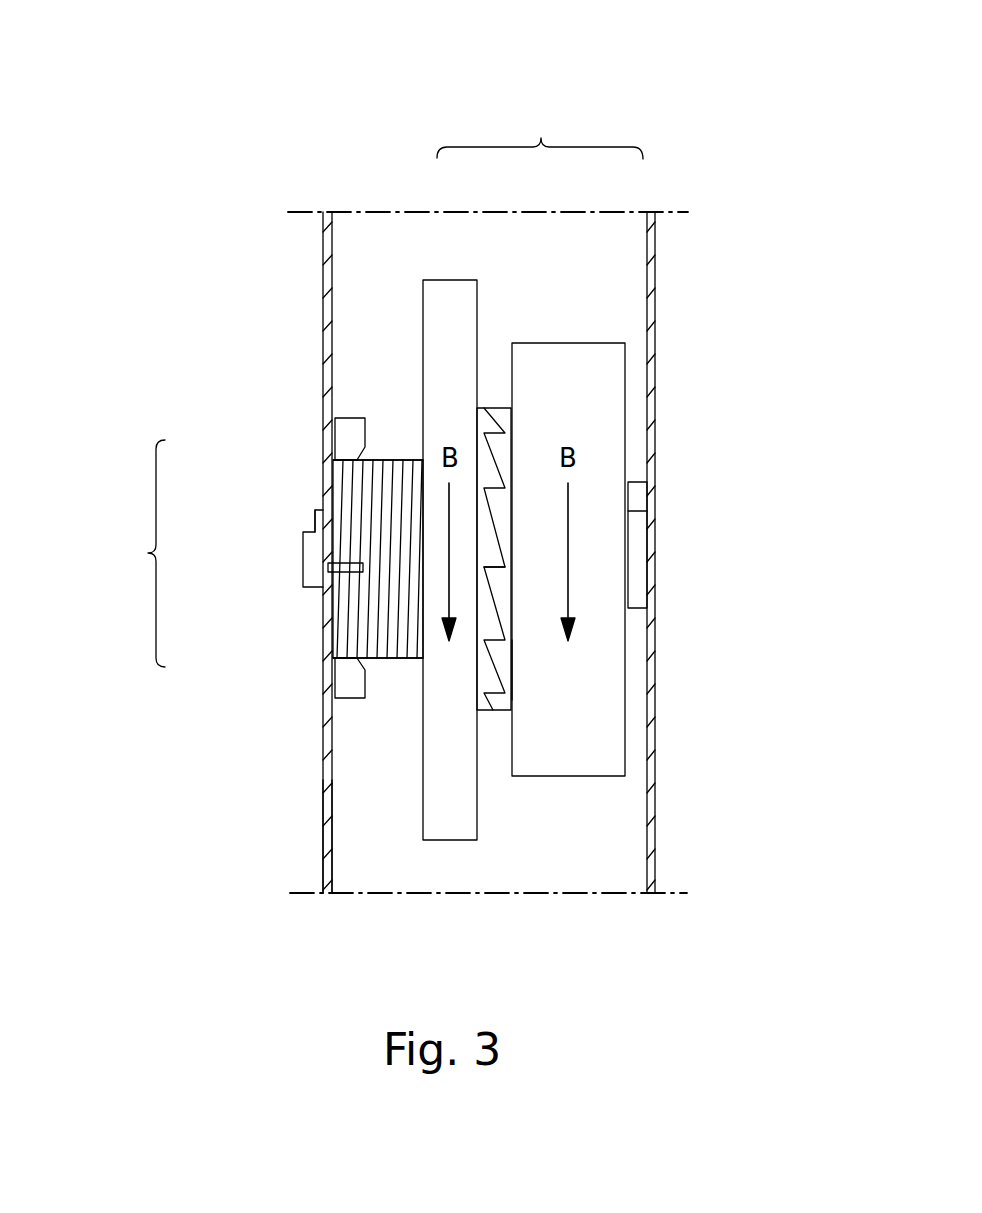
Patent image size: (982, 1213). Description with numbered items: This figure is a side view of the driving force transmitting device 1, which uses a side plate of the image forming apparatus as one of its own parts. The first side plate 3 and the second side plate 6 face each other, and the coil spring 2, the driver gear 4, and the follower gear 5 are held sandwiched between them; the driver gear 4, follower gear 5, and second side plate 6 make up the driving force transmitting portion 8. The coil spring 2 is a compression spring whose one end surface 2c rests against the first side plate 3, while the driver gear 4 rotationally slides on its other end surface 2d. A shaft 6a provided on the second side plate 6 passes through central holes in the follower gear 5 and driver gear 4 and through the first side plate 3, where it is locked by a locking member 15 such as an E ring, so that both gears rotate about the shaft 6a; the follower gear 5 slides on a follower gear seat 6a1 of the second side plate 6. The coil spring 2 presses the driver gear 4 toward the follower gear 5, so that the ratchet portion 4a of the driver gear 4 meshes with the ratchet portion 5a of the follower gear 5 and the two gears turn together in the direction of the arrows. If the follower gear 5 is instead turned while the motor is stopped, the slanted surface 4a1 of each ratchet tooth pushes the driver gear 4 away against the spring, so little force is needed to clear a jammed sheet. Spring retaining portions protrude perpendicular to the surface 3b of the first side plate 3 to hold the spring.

The driving force transmitting device 1 is at (390, 157).
The coil spring 2 is at (367, 497).
The end surface of coil spring 2c is at (381, 625).
The other end surface of coil spring 2d is at (395, 480).
The first side plate 3 is at (322, 330).
The surface of first side plate 3b is at (322, 823).
The driver gear 4 is at (460, 298).
The ratchet portion of driver gear 4a is at (497, 418).
The slanted surface 4a1 is at (495, 587).
The follower gear 5 is at (573, 352).
The ratchet portion of follower gear 5a is at (505, 668).
The second side plate 6 is at (647, 255).
The shaft 6a is at (305, 590).
The follower gear seat 6a1 is at (642, 532).
The driving force transmitting portion 8 is at (540, 131).
The locking member 15 is at (308, 511).